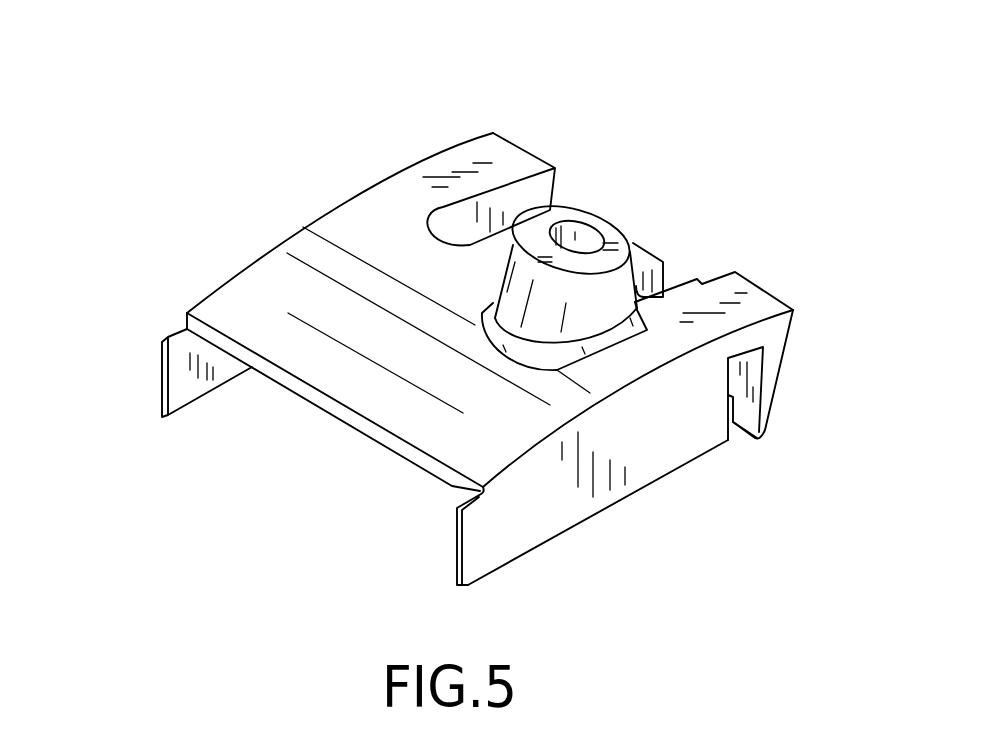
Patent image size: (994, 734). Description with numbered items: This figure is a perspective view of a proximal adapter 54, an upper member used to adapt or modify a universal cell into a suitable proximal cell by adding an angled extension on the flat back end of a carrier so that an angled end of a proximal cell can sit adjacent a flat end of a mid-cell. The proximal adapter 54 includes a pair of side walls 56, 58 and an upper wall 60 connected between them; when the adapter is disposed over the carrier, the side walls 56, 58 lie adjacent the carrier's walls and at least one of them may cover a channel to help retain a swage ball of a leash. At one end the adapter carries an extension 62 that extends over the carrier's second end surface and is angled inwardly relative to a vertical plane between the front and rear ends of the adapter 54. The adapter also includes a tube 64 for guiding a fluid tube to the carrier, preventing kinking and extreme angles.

The proximal adapter 54 is at (384, 112).
The side wall 56 is at (164, 393).
The side wall 58 is at (458, 542).
The upper wall 60 is at (327, 417).
The extension 62 is at (790, 346).
The tube 64 is at (588, 236).